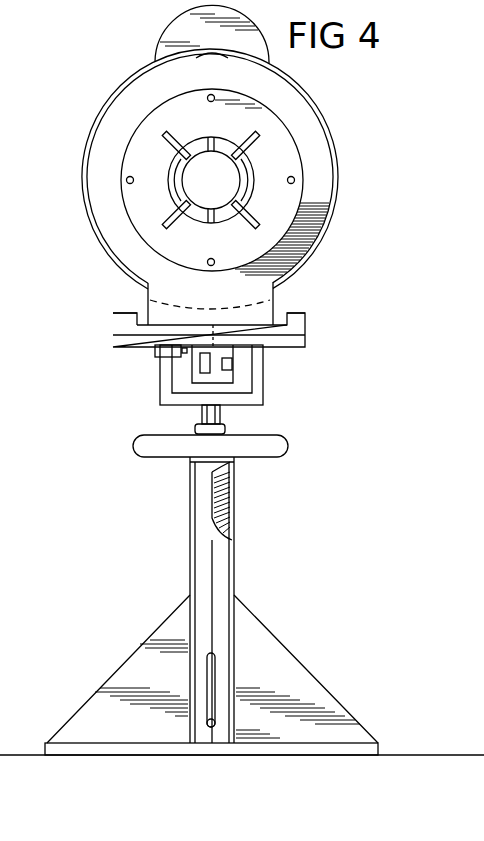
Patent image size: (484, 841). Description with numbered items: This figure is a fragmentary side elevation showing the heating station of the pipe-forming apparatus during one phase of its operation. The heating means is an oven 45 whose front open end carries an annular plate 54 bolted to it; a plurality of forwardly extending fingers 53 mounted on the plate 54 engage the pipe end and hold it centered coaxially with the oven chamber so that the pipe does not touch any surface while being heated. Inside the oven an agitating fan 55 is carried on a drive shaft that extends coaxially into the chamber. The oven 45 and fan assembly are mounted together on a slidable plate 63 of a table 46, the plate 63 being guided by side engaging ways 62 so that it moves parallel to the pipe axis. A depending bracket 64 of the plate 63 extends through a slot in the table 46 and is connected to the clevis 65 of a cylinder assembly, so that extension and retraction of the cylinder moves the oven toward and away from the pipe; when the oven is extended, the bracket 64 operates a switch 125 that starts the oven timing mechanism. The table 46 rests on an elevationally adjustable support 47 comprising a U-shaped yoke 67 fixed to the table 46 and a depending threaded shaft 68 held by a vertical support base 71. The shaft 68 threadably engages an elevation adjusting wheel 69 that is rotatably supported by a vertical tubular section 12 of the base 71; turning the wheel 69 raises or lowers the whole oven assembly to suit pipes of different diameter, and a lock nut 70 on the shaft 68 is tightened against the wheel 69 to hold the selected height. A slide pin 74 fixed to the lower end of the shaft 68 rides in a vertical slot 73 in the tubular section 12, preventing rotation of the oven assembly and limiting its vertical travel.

The support post 12 is at (190, 560).
The oven 45 is at (334, 127).
The table 46 is at (308, 333).
The elevationally adjustable support 47 is at (244, 511).
The fingers 53 is at (250, 138).
The annular plate 54 is at (290, 203).
The agitating fan 55 is at (249, 162).
The ways 62 is at (122, 316).
The slidable plate 63 is at (242, 327).
The bracket 64 is at (222, 360).
The clevis 65 is at (205, 364).
The U-shaped yoke 67 is at (266, 388).
The threaded shaft 68 is at (205, 413).
The elevation adjusting wheel 69 is at (286, 448).
The lock nut 70 is at (228, 430).
The support base 71 is at (142, 650).
The slot 73 is at (215, 680).
The slide pin 74 is at (217, 722).
The switch 125 is at (158, 352).